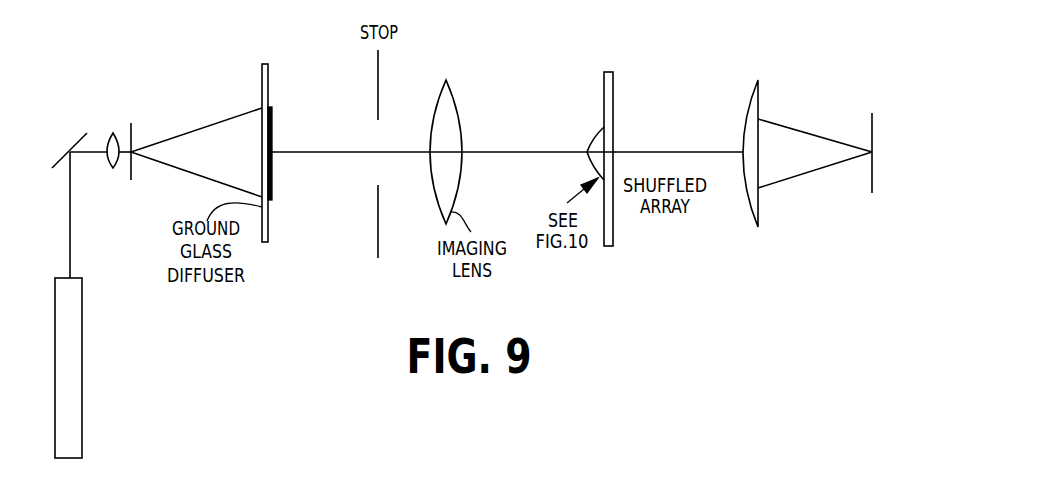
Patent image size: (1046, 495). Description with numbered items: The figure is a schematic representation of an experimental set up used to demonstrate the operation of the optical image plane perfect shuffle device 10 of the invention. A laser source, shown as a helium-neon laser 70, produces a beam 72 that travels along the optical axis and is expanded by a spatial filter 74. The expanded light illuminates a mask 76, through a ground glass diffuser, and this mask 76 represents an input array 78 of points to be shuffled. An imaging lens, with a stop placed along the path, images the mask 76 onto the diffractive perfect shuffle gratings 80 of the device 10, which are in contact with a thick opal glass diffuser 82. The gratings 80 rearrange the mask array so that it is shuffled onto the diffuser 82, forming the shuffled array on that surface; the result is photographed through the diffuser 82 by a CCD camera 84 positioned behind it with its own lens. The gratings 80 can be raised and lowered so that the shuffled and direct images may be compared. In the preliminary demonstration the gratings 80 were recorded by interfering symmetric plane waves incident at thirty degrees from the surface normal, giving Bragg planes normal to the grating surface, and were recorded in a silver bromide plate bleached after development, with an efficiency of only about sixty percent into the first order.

The optical image plane perfect shuffle device 10 is at (643, 100).
The helium-neon laser 70 is at (125, 405).
The beam 72 is at (70, 202).
The spatial filter 74 is at (133, 137).
The mask 76 is at (272, 130).
The input array 78 is at (302, 176).
The diffractive perfect shuffle gratings 80 is at (573, 118).
The opal glass diffuser 82 is at (615, 235).
The CCD camera 84 is at (872, 128).